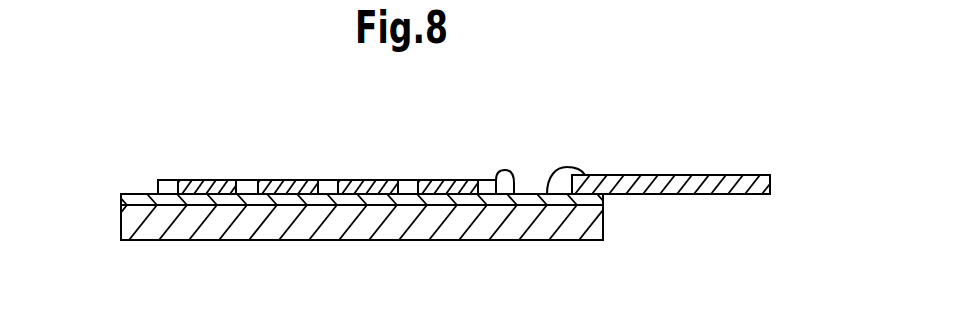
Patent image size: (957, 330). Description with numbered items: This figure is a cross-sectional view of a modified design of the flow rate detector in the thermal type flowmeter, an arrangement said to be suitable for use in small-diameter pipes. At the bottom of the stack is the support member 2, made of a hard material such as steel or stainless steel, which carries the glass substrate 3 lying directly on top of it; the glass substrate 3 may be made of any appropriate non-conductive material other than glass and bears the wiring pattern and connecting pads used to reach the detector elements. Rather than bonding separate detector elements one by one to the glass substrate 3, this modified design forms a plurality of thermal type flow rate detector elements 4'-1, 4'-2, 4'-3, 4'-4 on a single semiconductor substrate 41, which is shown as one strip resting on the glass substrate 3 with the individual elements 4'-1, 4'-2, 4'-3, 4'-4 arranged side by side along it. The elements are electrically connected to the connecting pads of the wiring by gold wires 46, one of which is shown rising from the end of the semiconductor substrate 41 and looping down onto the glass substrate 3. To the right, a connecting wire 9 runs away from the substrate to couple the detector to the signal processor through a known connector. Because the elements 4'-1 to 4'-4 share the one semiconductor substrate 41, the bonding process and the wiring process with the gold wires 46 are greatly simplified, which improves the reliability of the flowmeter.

The support member 2 is at (603, 240).
The glass substrate 3 is at (603, 200).
The semiconductor substrate 41 is at (158, 182).
The thermal type flow rate detector element 4'-1 is at (205, 154).
The thermal type flow rate detector element 4'-2 is at (285, 155).
The thermal type flow rate detector element 4'-3 is at (365, 155).
The thermal type flow rate detector element 4'-4 is at (445, 155).
The gold wire 46 is at (500, 177).
The connecting wire 9 is at (658, 175).